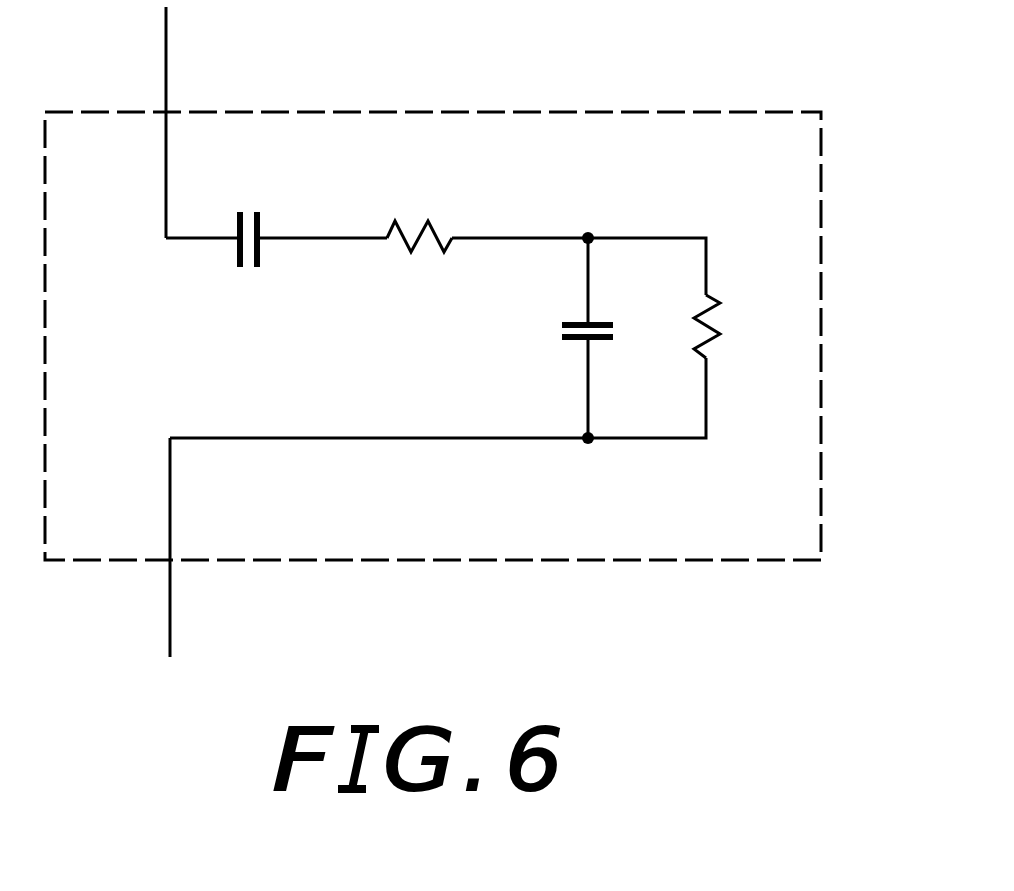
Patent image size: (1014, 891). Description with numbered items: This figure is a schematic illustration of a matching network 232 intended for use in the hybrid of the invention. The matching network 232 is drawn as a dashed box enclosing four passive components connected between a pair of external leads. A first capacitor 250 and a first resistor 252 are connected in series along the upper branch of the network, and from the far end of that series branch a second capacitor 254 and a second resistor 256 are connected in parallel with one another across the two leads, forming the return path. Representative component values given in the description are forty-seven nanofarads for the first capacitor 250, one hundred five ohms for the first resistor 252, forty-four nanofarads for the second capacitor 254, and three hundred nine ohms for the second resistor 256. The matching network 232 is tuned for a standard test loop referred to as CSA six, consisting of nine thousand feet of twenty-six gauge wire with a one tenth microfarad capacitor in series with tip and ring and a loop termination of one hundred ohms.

The matching network 232 is at (745, 112).
The capacitor C1 250 is at (262, 222).
The resistor R1 252 is at (432, 227).
The capacitor C2 254 is at (568, 341).
The resistor R2 256 is at (722, 316).